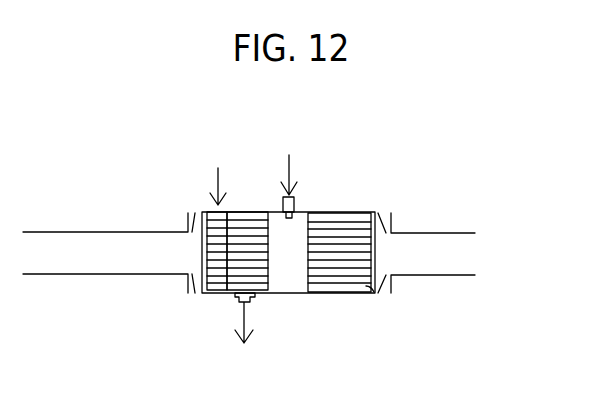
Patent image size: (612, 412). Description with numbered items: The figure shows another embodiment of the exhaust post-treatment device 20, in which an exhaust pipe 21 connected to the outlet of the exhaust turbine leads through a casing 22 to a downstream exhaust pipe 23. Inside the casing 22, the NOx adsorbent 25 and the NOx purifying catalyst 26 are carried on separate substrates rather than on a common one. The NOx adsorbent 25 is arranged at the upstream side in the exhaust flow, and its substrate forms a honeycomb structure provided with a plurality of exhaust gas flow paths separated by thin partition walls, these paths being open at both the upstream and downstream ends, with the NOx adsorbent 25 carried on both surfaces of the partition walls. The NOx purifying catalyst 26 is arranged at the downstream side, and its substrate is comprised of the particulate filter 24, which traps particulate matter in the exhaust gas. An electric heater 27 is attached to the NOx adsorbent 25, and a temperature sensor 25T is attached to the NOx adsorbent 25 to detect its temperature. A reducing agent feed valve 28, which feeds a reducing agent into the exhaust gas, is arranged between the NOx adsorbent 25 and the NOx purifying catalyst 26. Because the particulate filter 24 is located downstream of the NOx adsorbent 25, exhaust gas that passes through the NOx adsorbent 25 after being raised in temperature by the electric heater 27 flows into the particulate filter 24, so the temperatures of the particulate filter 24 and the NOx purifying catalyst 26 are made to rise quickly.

The exhaust post-treatment device 20 is at (493, 356).
The exhaust pipe 21 is at (62, 232).
The casing 22 is at (376, 213).
The exhaust pipe 23 is at (452, 233).
The particulate filter 24 is at (373, 287).
The NOx adsorbent 25 is at (263, 277).
The temperature sensor 25T is at (242, 280).
The NOx purifying catalyst 26 is at (345, 278).
The electric heater 27 is at (212, 285).
The reducing agent feed valve 28 is at (294, 205).